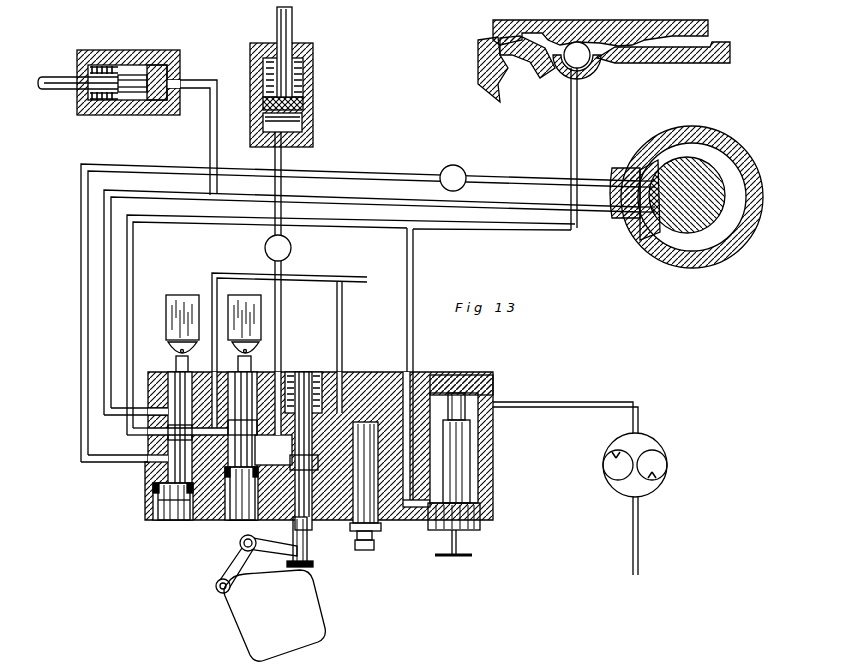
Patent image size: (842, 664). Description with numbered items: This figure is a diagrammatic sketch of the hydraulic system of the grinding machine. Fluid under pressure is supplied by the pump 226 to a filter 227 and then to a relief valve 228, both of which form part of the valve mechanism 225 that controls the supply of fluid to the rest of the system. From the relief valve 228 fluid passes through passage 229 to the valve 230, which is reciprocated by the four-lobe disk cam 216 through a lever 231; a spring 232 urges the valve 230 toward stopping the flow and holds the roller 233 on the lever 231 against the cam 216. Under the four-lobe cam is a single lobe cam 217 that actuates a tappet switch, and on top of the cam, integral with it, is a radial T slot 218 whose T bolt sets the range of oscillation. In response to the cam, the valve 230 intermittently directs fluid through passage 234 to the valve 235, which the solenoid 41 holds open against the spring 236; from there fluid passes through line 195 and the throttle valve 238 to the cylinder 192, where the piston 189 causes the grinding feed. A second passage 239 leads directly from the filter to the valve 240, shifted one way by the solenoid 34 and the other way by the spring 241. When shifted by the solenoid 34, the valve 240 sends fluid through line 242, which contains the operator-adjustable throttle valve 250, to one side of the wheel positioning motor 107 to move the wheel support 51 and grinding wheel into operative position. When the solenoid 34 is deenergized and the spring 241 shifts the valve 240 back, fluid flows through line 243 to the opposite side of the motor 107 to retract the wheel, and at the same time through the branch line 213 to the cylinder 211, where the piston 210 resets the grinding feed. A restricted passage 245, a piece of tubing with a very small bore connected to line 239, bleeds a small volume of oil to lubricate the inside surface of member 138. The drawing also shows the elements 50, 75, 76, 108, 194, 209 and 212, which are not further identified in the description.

The solenoid 34 is at (172, 295).
The solenoid 41 is at (238, 298).
The rail member 50 is at (478, 70).
The wheel support 51 is at (545, 76).
The upper rail member 75 is at (497, 31).
The lower rail plate 76 is at (700, 43).
The wheel positioning motor 107 is at (700, 258).
The rotor 108 is at (695, 170).
The member 138 is at (615, 78).
The piston 189 is at (305, 103).
The cylinder 192 is at (312, 118).
The plunger 194 is at (315, 59).
The line 195 is at (282, 298).
The rod 209 is at (50, 76).
The piston 210 is at (167, 72).
The cylinder 211 is at (152, 56).
The spring 212 is at (112, 66).
The branch line 213 is at (210, 130).
The disk cam 216 is at (325, 616).
The single lobe cam 217 is at (518, 663).
The radial T slot 218 is at (458, 662).
The valve mechanism 225 is at (347, 372).
The pump 226 is at (652, 445).
The filter 227 is at (494, 474).
The relief valve 228 is at (378, 530).
The passage 229 is at (358, 375).
The valve 230 is at (308, 540).
The lever 231 is at (228, 568).
The spring 232 is at (297, 372).
The roller 233 is at (216, 586).
The passage 234 is at (250, 520).
The valve 235 is at (160, 519).
The spring 236 is at (178, 520).
The throttle valve 238 is at (291, 248).
The passage 239 is at (390, 229).
The valve 240 is at (148, 468).
The spring 241 is at (148, 488).
The line 242 is at (81, 275).
The line 243 is at (104, 238).
The restricted passage 245 is at (553, 229).
The throttle valve 250 is at (445, 168).